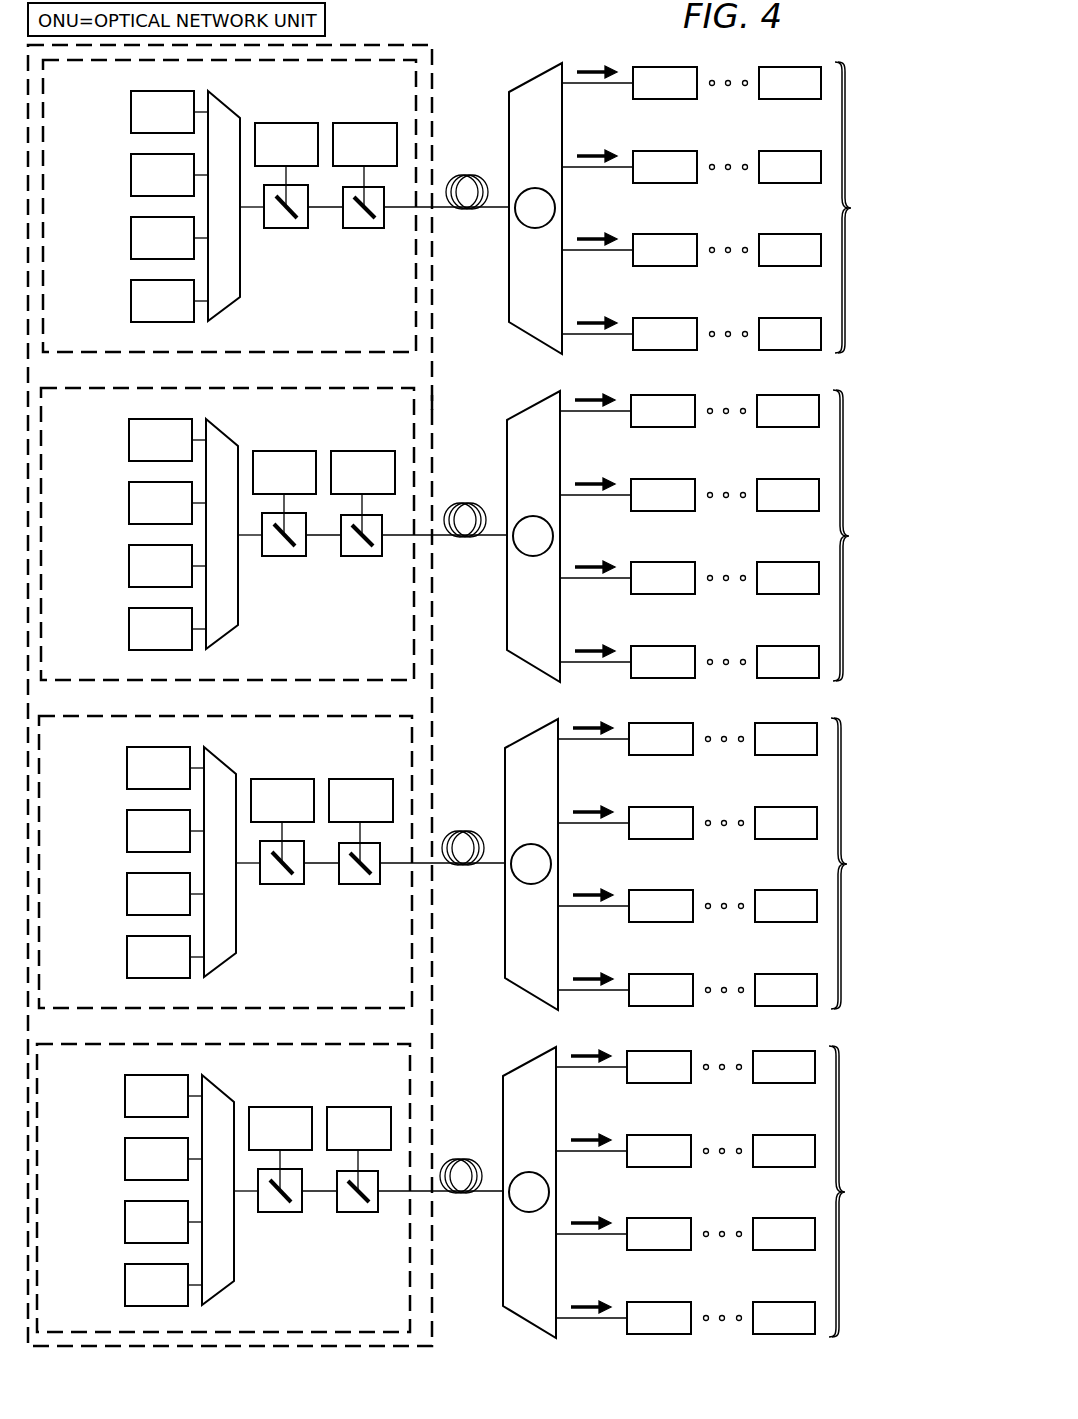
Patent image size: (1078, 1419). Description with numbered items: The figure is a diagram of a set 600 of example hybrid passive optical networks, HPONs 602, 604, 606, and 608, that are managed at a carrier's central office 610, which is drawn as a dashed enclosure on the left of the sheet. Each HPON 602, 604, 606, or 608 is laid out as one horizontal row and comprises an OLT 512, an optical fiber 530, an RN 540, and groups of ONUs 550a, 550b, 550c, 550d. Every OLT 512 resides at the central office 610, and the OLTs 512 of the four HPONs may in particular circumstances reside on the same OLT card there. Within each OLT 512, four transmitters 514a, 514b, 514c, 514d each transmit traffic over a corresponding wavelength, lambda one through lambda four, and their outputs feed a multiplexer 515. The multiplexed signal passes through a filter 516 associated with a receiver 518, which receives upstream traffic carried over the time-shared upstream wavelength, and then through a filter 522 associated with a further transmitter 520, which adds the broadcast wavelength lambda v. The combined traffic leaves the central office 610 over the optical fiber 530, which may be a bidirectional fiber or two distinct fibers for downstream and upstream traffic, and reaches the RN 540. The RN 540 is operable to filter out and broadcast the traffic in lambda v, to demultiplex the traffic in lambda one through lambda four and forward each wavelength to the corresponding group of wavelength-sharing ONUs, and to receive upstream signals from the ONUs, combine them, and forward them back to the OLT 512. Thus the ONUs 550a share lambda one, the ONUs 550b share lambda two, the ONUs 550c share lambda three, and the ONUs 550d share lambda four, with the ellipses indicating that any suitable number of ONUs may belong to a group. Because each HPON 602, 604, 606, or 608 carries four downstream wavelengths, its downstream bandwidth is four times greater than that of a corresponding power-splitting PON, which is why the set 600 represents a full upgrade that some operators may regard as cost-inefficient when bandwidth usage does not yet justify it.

The OLT 512 is at (370, 331).
The transmitter 514a is at (131, 107).
The transmitter 514b is at (131, 170).
The transmitter 514c is at (131, 246).
The transmitter 514d is at (131, 306).
The multiplexer 515 is at (240, 282).
The filter 516 is at (292, 228).
The receiver 518 is at (283, 123).
The transmitter 520 is at (359, 123).
The filter 522 is at (370, 228).
The optical fiber 530 is at (466, 175).
The RN 540 is at (509, 276).
The ONUs 550a is at (660, 67).
The ONUs 550b is at (677, 134).
The ONUs 550c is at (677, 217).
The ONUs 550d is at (677, 301).
The set 600 is at (860, 62).
The HPON 602 is at (862, 207).
The HPON 604 is at (860, 535).
The HPON 606 is at (858, 863).
The HPON 608 is at (856, 1191).
The carrier's central office 610 is at (440, 402).